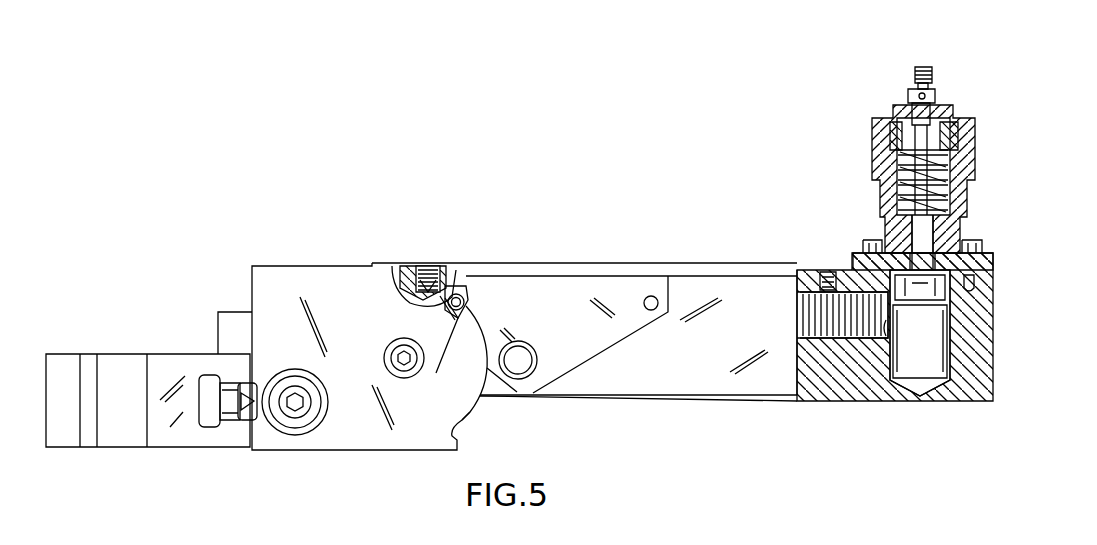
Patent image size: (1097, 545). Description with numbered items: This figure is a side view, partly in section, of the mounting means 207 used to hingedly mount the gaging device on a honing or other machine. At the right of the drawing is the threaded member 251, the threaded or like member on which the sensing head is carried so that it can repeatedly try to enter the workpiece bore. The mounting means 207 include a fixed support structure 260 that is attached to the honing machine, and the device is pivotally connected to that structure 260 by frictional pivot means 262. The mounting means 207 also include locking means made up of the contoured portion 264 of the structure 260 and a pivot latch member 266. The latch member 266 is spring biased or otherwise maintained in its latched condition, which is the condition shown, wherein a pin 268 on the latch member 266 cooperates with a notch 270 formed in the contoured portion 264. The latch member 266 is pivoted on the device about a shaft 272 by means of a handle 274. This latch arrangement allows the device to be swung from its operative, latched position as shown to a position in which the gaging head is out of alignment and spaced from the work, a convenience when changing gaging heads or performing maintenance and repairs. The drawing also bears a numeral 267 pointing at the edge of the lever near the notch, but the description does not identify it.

The threaded member 251 is at (914, 75).
The mounting means 207 is at (376, 243).
The fixed support structure 260 is at (305, 264).
The frictional pivot means 262 is at (382, 353).
The contoured portion 264 is at (472, 328).
The pivot latch member 266 is at (590, 277).
The notch 267 is at (472, 414).
The pin 268 is at (460, 292).
The notch 270 is at (450, 360).
The shaft 272 is at (525, 368).
The handle 274 is at (651, 296).